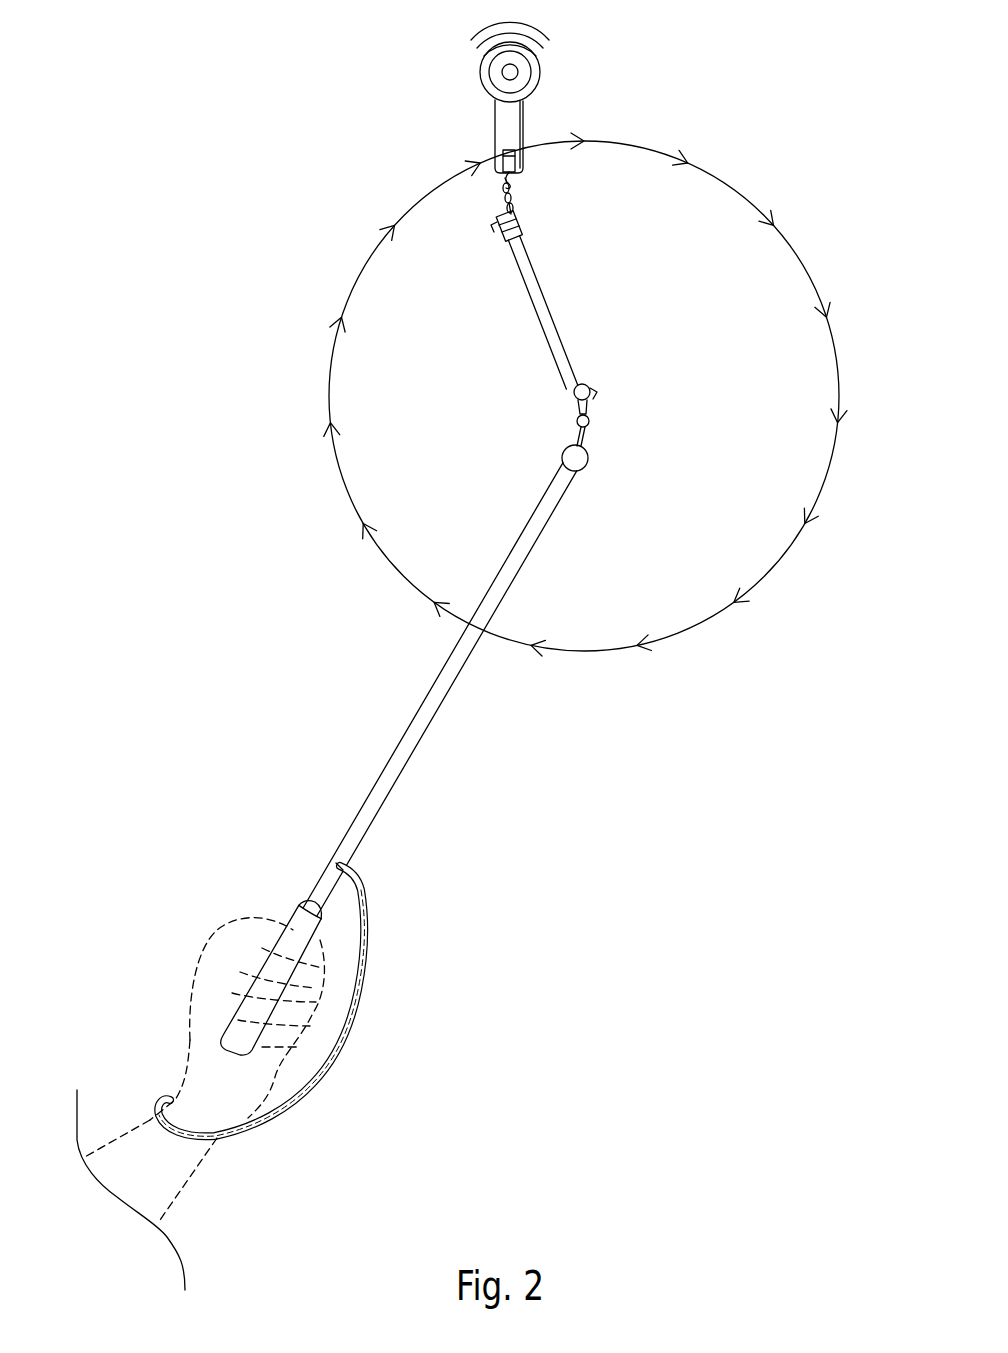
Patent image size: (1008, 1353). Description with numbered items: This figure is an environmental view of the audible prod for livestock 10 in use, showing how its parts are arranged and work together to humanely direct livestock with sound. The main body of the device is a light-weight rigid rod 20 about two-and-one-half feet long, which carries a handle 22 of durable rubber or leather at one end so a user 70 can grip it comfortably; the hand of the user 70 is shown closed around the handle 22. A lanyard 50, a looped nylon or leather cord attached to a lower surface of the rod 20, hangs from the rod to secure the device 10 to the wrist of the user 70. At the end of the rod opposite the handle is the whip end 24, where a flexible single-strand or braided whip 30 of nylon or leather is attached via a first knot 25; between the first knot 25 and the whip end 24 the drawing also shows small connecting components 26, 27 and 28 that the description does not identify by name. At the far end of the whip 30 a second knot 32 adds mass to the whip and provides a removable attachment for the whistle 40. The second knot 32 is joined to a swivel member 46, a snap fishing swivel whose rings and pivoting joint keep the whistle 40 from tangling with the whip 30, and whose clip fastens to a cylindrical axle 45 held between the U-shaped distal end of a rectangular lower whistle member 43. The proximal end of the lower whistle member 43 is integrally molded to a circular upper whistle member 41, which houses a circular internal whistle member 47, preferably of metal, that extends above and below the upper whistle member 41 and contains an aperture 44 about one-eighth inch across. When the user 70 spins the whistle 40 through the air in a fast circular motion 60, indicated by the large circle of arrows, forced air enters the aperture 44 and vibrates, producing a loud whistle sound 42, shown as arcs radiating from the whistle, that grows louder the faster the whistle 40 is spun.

The audible prod for livestock 10 is at (160, 152).
The rod 20 is at (418, 749).
The handle 22 is at (290, 921).
The whip end 24 is at (580, 468).
The first knot 25 is at (592, 388).
The pin 26 is at (570, 452).
The snap clip 27 is at (578, 417).
The ring 28 is at (589, 423).
The whip 30 is at (534, 300).
The second knot 32 is at (527, 229).
The whistle 40 is at (531, 120).
The upper whistle member 41 is at (540, 63).
The whistle sound 42 is at (490, 30).
The lower whistle member 43 is at (510, 137).
The aperture 44 is at (520, 76).
The cylindrical axle 45 is at (512, 172).
The swivel member 46 is at (507, 210).
The internal whistle member 47 is at (495, 72).
The lanyard 50 is at (363, 943).
The circular motion 60 is at (738, 187).
The user 70 is at (215, 1055).